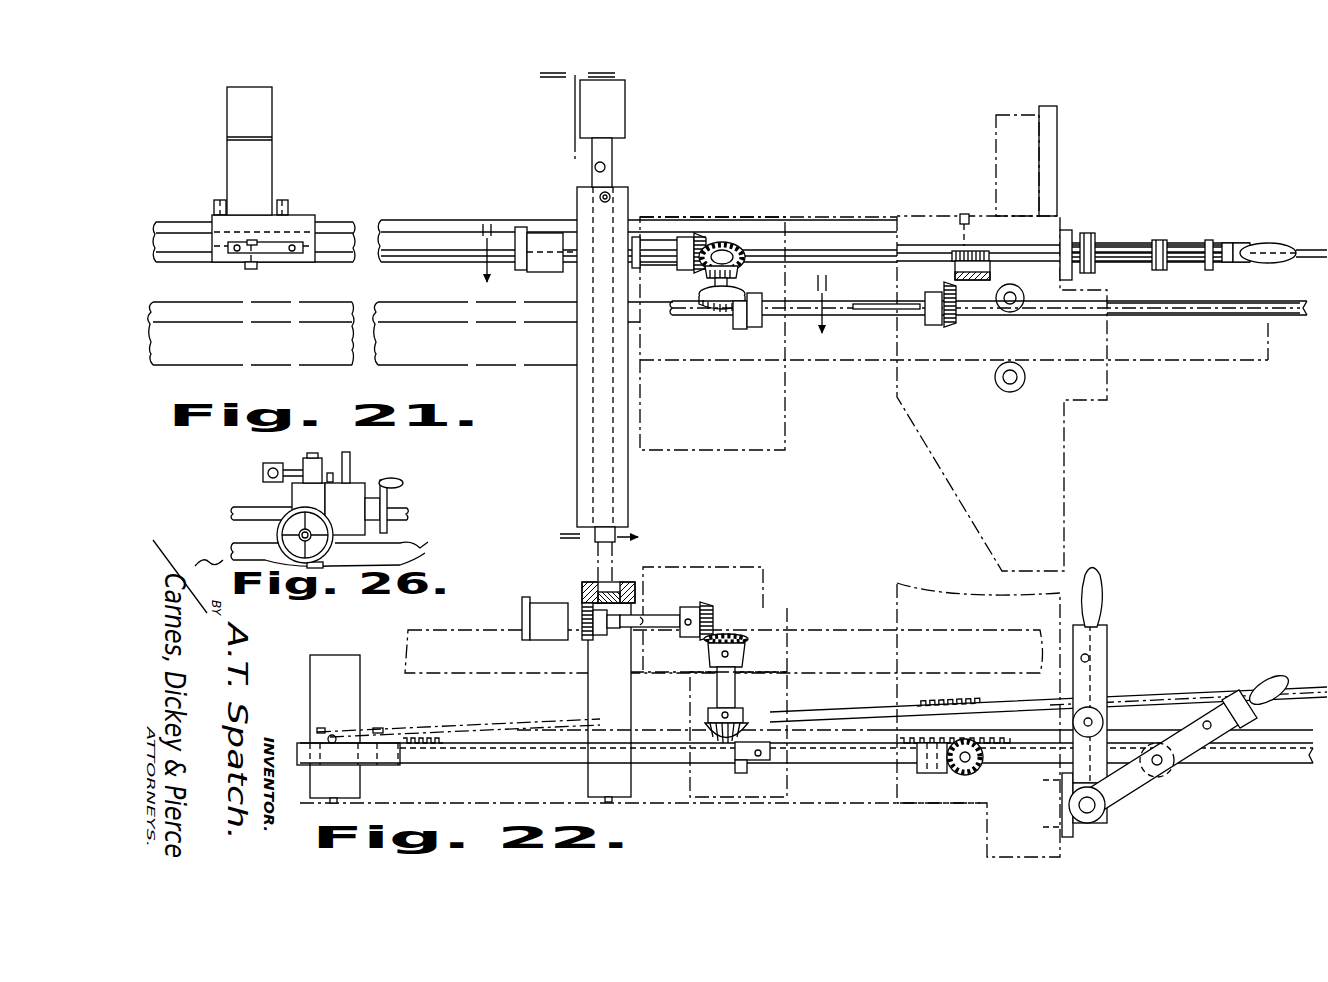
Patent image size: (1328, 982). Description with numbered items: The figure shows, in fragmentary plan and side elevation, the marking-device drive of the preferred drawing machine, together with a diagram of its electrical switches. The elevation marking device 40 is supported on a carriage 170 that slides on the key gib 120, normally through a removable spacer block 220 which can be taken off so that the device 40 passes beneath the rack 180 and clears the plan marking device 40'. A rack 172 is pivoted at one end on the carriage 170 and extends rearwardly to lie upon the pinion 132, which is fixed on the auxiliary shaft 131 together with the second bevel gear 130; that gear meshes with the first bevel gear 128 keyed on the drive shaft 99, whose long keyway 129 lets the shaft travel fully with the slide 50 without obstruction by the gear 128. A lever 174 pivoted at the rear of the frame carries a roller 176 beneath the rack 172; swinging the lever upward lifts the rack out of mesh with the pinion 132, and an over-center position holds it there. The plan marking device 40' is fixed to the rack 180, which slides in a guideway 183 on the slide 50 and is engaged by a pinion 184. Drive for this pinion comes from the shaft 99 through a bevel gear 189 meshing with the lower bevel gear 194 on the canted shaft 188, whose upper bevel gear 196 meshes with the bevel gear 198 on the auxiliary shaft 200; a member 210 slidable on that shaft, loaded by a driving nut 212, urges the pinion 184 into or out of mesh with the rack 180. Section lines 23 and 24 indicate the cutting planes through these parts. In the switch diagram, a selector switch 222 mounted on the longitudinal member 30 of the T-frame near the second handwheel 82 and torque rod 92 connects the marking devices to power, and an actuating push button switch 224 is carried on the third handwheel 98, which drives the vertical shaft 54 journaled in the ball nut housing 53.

In FIG. 21, the marking device 40 is at (283, 149).
In FIG. 22, the marking device 40 is at (335, 710).
In FIG. 21, the second marking device 40' is at (628, 131).
In FIG. 22, the second marking device 40' is at (569, 702).
In FIG. 21, the removable spacer block 220 is at (260, 158).
In FIG. 21, the carriage 170 is at (303, 215).
In FIG. 21, the key gib 120 is at (400, 223).
In FIG. 21, the rack 172 is at (340, 258).
In FIG. 22, the rack 172 is at (535, 728).
In FIG. 21, the member 210 is at (550, 228).
In FIG. 22, the member 210 is at (547, 633).
In FIG. 21, the driving nut 212 is at (520, 270).
In FIG. 21, the guideway 183 is at (577, 445).
In FIG. 22, the guideway 183 is at (583, 582).
In FIG. 21, the rack 180 is at (612, 176).
In FIG. 22, the rack 180 is at (607, 587).
In FIG. 21, the auxiliary shaft 200 is at (648, 245).
In FIG. 22, the auxiliary shaft 200 is at (657, 612).
In FIG. 21, the bevel gear 198 is at (705, 230).
In FIG. 22, the bevel gear 198 is at (707, 606).
In FIG. 21, the bevel gear 196 is at (732, 240).
In FIG. 22, the bevel gear 196 is at (747, 633).
In FIG. 21, the canted shaft 188 is at (705, 283).
In FIG. 22, the canted shaft 188 is at (733, 689).
In FIG. 21, the bevel gear 194 is at (712, 312).
In FIG. 22, the bevel gear 194 is at (710, 708).
In FIG. 21, the bevel gear 189 is at (740, 323).
In FIG. 22, the bevel gear 189 is at (760, 777).
In FIG. 21, the drive shaft 99 is at (848, 300).
In FIG. 22, the drive shaft 99 is at (833, 751).
In FIG. 21, the keyway 129 is at (1183, 306).
In FIG. 21, the auxiliary shaft 131 is at (962, 214).
In FIG. 21, the second bevel gear 130 is at (950, 283).
In FIG. 21, the pinion 132 is at (992, 269).
In FIG. 22, the pinion 132 is at (972, 777).
In FIG. 21, the first bevel gear 128 is at (944, 326).
In FIG. 21, the roller 176 is at (1180, 240).
In FIG. 22, the roller 176 is at (1050, 713).
In FIG. 21, the lever 174 is at (1190, 243).
In FIG. 22, the lever 174 is at (1104, 657).
In FIG. 22, the slide 50 is at (827, 630).
In FIG. 22, the pinion 184 is at (585, 640).
In FIG. 21, the section line 23 is at (616, 84).
In FIG. 22, the section line 23 is at (620, 520).
In FIG. 21, the section line 24 is at (645, 290).
In FIG. 26, the selector switch 222 is at (263, 470).
In FIG. 26, the vertical shaft 54 is at (304, 453).
In FIG. 26, the torque rod 92 is at (353, 457).
In FIG. 26, the second handwheel 82 is at (380, 482).
In FIG. 26, the ball nut housing 53 is at (308, 495).
In FIG. 26, the actuating push button type switch 224 is at (283, 531).
In FIG. 26, the longitudinal member 30 is at (403, 543).
In FIG. 26, the third handwheel 98 is at (283, 550).